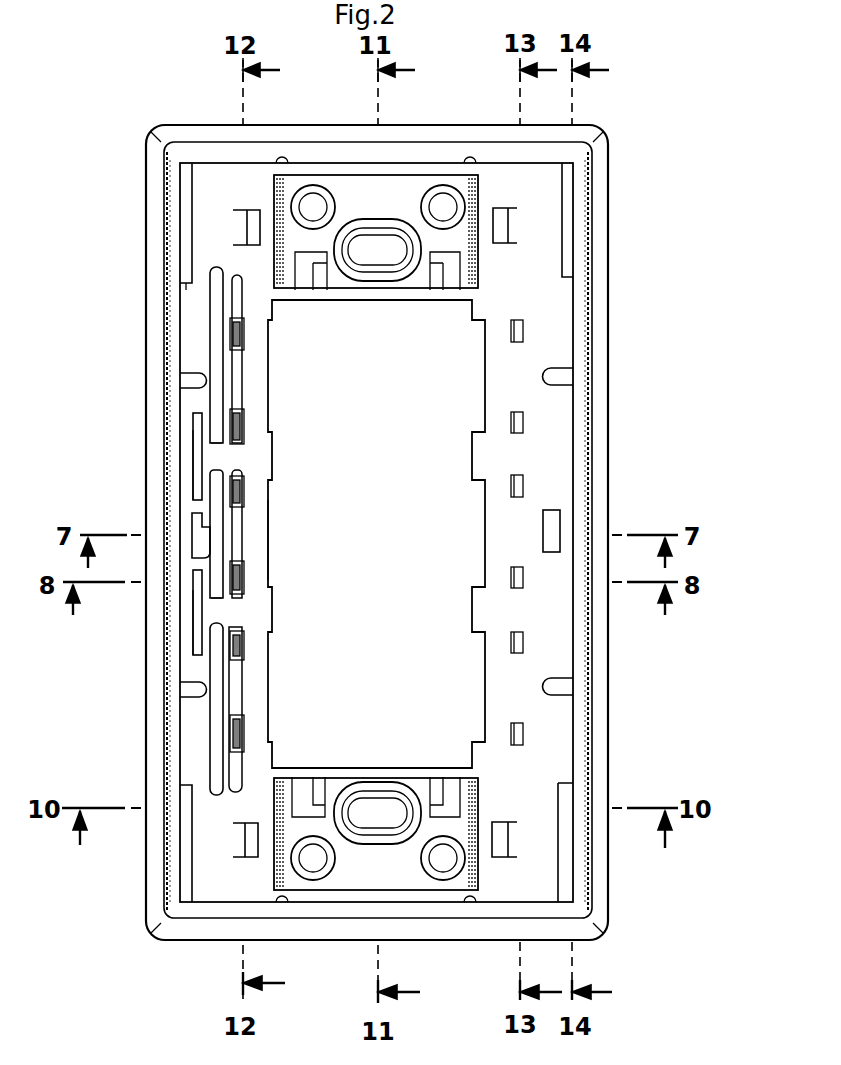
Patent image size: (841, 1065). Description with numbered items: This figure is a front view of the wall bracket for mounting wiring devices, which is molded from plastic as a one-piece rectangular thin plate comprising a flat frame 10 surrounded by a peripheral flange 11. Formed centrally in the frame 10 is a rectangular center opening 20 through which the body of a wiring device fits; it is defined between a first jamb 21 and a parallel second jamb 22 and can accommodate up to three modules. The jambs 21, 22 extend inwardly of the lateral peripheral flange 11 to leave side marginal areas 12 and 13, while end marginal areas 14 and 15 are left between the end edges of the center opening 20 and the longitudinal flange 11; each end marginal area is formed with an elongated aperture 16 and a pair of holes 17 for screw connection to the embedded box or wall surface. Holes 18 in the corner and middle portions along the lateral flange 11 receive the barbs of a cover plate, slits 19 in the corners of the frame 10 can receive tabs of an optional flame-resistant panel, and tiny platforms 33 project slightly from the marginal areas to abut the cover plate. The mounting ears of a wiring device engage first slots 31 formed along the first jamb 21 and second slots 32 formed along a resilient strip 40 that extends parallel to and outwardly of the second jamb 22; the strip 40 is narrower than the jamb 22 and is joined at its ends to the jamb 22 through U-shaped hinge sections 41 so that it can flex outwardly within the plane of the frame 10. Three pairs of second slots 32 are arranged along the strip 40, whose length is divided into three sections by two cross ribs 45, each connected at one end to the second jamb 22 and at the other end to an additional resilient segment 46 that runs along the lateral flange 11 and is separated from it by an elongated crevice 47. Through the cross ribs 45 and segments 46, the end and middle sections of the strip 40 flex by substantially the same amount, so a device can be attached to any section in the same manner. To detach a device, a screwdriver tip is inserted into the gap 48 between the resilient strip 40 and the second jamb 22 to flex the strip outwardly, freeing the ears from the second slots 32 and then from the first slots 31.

The frame 10 is at (603, 128).
The peripheral flange 11 is at (592, 479).
The side marginal area 12 is at (556, 444).
The side marginal area 13 is at (188, 404).
The end marginal area 14 is at (286, 240).
The end marginal area 15 is at (350, 883).
The elongated aperture 16 is at (379, 247).
The hole 17 is at (313, 205).
The hole 18 is at (246, 222).
The slit 19 is at (566, 233).
The center opening 20 is at (397, 766).
The first jamb 21 is at (488, 535).
The second jamb 22 is at (258, 574).
The first slot 31 is at (522, 328).
The second slot 32 is at (240, 418).
The platform 33 is at (190, 381).
The resilient strip 40 is at (224, 365).
The U-shaped hinge section 41 is at (226, 270).
The cross rib 45 is at (225, 460).
The additional resilient segment 46 is at (205, 430).
The elongated crevice 47 is at (197, 472).
The gap 48 is at (233, 378).